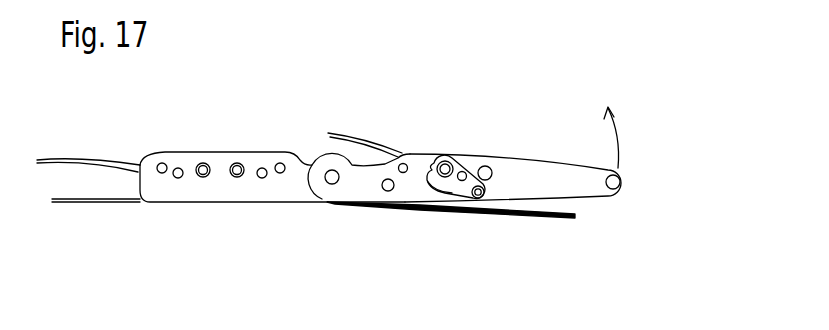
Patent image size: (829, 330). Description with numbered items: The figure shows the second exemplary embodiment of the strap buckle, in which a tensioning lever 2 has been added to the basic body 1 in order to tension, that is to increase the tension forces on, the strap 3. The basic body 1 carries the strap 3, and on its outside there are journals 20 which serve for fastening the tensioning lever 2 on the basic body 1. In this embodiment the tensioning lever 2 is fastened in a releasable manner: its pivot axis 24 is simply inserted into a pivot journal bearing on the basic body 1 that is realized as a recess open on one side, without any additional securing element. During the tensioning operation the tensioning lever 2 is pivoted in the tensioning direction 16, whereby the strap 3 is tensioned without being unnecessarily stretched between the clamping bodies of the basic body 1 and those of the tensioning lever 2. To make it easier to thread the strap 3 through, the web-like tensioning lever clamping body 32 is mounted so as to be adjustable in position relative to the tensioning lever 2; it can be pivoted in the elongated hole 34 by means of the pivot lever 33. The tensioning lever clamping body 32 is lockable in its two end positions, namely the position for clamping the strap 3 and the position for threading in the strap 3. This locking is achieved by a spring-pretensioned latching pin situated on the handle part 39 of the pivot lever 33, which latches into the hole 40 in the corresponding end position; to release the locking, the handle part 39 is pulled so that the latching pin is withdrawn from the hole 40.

The basic body 1 is at (212, 203).
The tensioning lever 2 is at (524, 172).
The strap 3 is at (98, 158).
The tensioning direction 16 is at (618, 143).
The journals 20 is at (206, 163).
The pivot axis 24 is at (330, 184).
The tensioning lever clamping body 32 is at (463, 171).
The pivot lever 33 is at (473, 170).
The elongated hole 34 is at (440, 190).
The handle part 39 is at (479, 197).
The hole 40 is at (404, 163).